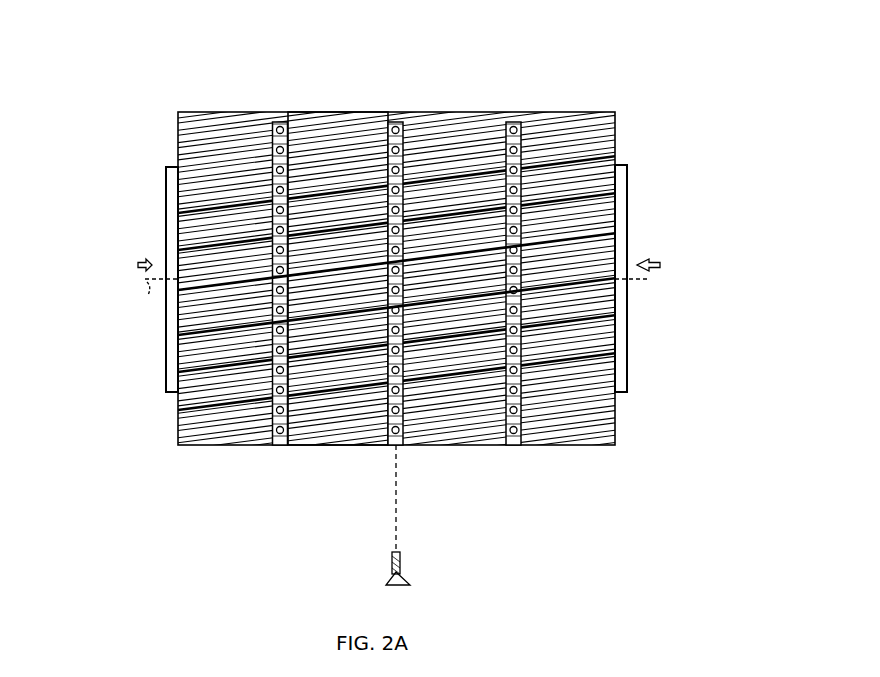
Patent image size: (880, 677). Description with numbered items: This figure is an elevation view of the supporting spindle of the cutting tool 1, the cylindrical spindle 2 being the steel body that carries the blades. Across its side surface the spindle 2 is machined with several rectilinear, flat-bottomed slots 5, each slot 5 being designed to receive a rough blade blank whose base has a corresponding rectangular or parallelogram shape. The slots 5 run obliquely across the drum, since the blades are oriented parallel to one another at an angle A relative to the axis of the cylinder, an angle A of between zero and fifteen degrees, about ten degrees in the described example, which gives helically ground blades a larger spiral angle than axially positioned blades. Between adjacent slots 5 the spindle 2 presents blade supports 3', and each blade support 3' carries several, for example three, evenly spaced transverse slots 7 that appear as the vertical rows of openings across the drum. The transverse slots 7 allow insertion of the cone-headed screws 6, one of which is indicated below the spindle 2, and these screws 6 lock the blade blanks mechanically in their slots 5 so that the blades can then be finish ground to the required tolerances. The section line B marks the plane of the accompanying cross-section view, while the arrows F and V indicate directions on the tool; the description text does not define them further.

The cutting tool 1 is at (645, 110).
The cylindrical spindle 2 is at (320, 112).
The blade support 3' is at (458, 266).
The slot 5 is at (615, 235).
The cone-headed screw 6 is at (422, 575).
The transverse slot 7 is at (284, 458).
The angle A is at (147, 282).
The section line B is at (513, 495).
The force direction arrow F is at (143, 253).
The velocity direction arrow V is at (652, 256).